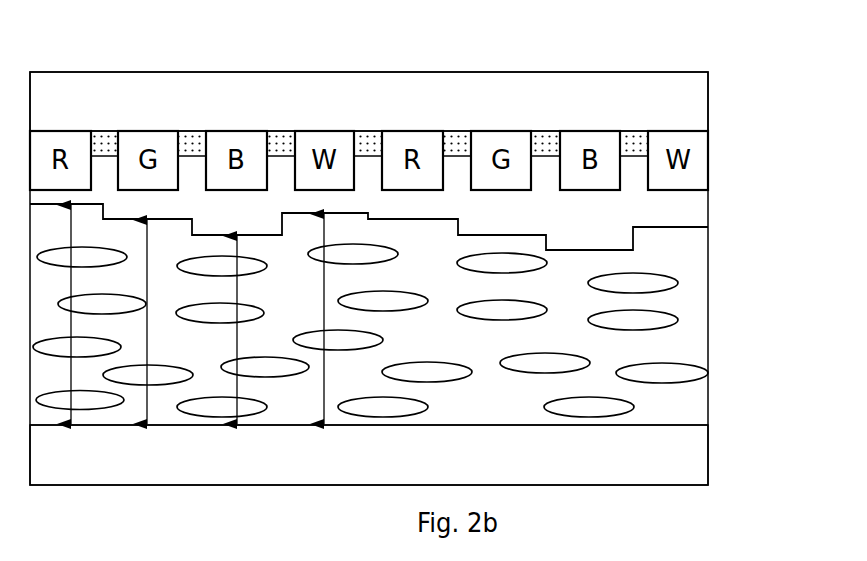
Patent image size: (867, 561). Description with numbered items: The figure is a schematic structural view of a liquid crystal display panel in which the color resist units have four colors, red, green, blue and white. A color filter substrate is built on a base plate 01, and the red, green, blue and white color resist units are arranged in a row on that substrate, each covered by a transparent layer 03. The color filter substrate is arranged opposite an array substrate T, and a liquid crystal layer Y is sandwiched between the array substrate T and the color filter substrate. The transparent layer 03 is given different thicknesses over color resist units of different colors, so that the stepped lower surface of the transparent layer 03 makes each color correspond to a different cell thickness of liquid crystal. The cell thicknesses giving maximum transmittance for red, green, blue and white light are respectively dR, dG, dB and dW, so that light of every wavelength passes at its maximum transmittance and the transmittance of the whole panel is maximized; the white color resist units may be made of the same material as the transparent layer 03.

The base plate 01 is at (708, 90).
The transparent layer 03 is at (708, 207).
The liquid crystal layer Y is at (678, 337).
The array substrate T is at (708, 465).
The cell thickness for red light dR is at (88, 314).
The cell thickness for green light dG is at (167, 322).
The cell thickness for blue light dB is at (256, 330).
The cell thickness for white light dW is at (344, 319).